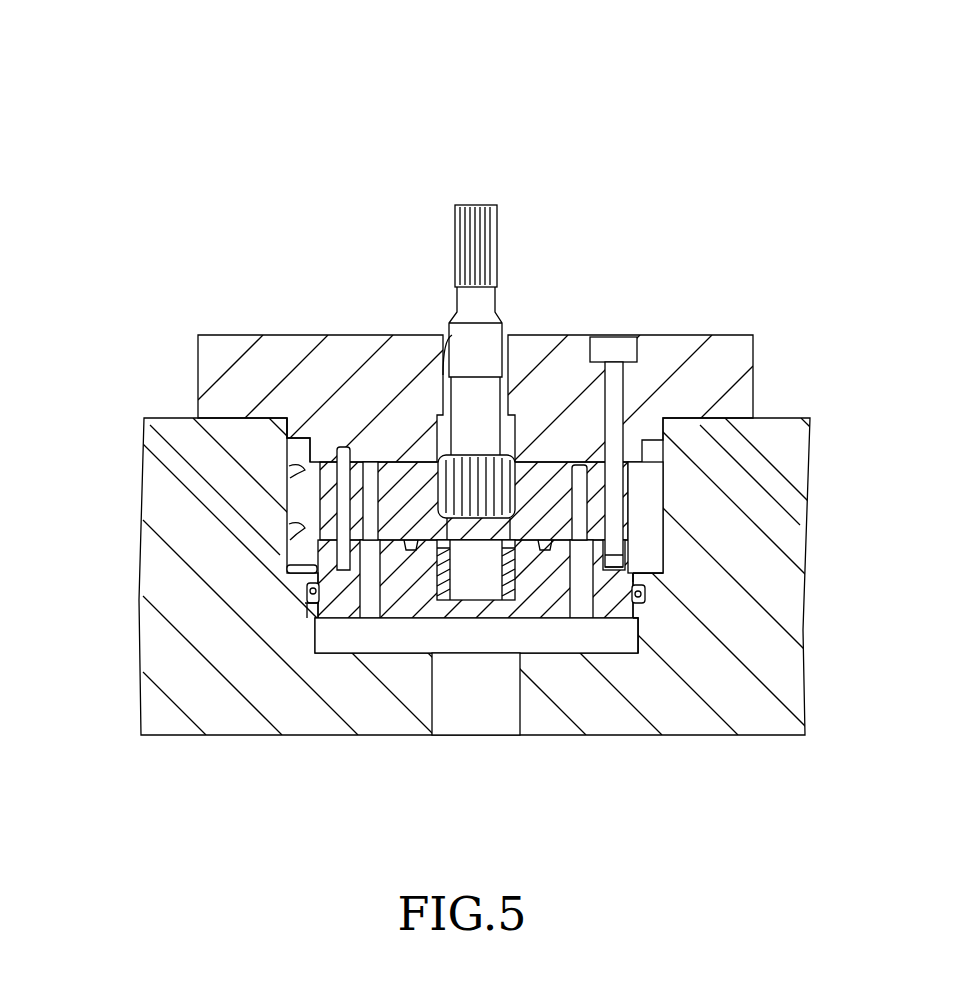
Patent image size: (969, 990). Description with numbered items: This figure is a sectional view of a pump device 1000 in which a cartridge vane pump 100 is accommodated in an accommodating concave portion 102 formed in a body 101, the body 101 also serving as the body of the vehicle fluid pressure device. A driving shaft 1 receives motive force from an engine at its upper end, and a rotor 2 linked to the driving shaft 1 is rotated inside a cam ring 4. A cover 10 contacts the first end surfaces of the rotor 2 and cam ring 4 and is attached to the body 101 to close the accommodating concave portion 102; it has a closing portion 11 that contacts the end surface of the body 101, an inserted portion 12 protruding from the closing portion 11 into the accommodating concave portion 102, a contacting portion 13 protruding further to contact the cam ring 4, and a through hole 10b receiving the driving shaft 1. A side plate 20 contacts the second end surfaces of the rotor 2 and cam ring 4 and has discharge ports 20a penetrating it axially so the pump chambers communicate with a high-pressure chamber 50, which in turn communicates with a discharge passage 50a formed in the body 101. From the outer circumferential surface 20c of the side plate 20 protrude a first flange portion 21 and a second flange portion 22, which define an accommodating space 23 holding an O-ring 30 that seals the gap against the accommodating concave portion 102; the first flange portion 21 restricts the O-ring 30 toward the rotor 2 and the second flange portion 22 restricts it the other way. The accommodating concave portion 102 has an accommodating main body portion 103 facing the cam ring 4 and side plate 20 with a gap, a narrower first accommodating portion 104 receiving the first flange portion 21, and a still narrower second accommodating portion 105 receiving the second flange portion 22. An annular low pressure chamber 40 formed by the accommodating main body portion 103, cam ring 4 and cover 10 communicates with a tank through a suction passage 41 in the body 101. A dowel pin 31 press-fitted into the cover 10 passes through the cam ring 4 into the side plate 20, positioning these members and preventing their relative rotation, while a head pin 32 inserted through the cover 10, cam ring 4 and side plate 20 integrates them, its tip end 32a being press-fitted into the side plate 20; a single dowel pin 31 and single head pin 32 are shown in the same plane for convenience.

The pump device 1000 is at (166, 97).
The driving shaft 1 is at (505, 203).
The cartridge vane pump 100 is at (735, 270).
The cover 10 is at (214, 330).
The closing portion 11 is at (240, 390).
The inserted portion 12 is at (297, 440).
The dowel pin 31 is at (340, 450).
The contacting portion 13 is at (368, 455).
The through hole 10b is at (440, 345).
The rotor 2 is at (545, 455).
The cam ring 4 is at (585, 462).
The head pin 32 is at (652, 344).
The tip end 32a is at (614, 555).
The body 101 is at (195, 458).
The accommodating concave portion 102 is at (297, 468).
The accommodating main body portion 103 is at (300, 525).
The first accommodating portion 104 is at (310, 592).
The second accommodating portion 105 is at (310, 605).
The low pressure chamber 40 is at (645, 493).
The suction passage 41 is at (770, 487).
The outer circumferential surface 20c is at (632, 547).
The first flange portion 21 is at (640, 580).
The accommodating space 23 is at (654, 603).
The O-ring 30 is at (305, 575).
The side plate 20 is at (345, 600).
The discharge port 20a is at (375, 600).
The high-pressure chamber 50 is at (510, 635).
The discharge passage 50a is at (470, 690).
The second flange portion 22 is at (640, 625).